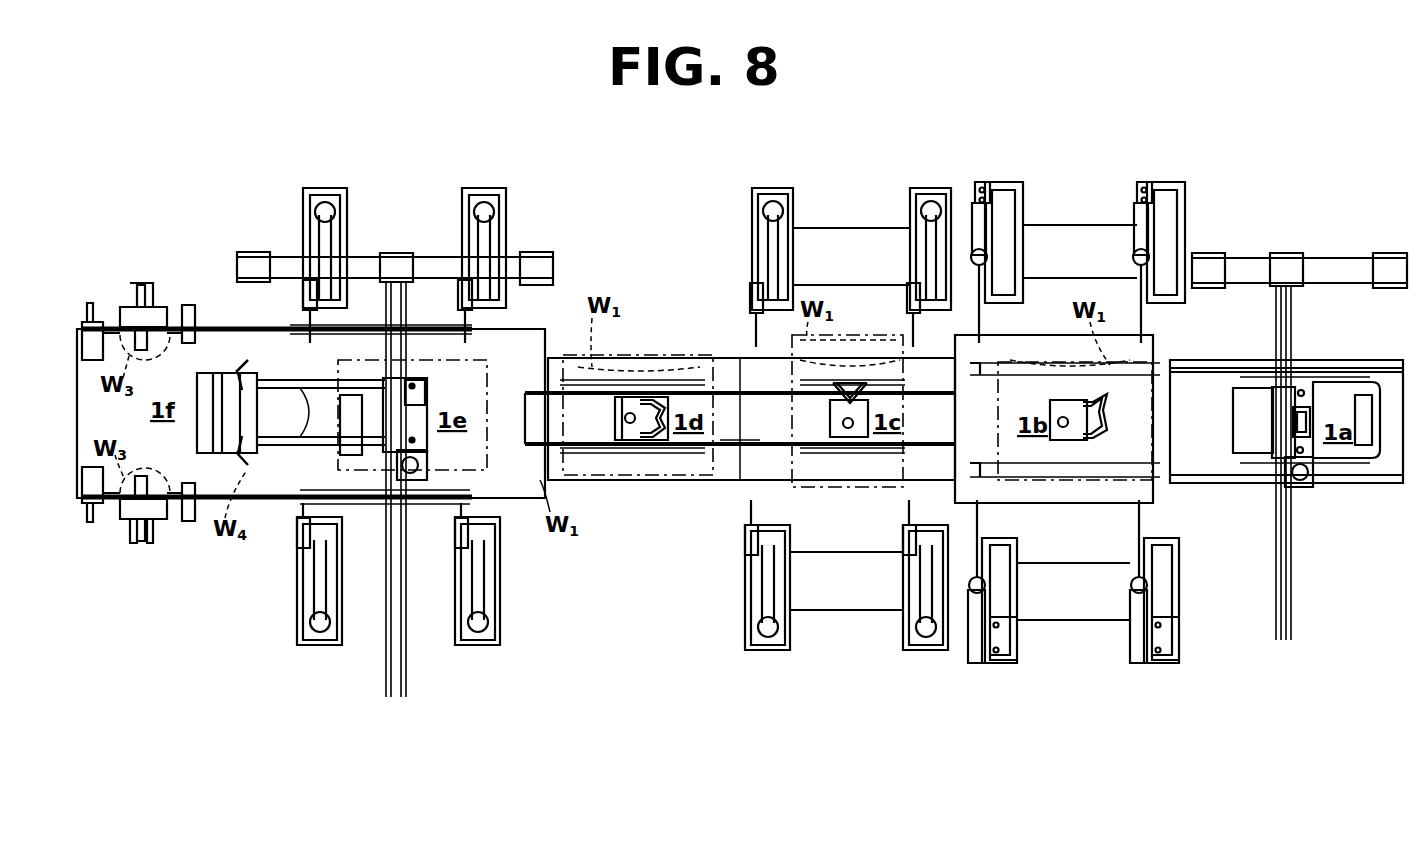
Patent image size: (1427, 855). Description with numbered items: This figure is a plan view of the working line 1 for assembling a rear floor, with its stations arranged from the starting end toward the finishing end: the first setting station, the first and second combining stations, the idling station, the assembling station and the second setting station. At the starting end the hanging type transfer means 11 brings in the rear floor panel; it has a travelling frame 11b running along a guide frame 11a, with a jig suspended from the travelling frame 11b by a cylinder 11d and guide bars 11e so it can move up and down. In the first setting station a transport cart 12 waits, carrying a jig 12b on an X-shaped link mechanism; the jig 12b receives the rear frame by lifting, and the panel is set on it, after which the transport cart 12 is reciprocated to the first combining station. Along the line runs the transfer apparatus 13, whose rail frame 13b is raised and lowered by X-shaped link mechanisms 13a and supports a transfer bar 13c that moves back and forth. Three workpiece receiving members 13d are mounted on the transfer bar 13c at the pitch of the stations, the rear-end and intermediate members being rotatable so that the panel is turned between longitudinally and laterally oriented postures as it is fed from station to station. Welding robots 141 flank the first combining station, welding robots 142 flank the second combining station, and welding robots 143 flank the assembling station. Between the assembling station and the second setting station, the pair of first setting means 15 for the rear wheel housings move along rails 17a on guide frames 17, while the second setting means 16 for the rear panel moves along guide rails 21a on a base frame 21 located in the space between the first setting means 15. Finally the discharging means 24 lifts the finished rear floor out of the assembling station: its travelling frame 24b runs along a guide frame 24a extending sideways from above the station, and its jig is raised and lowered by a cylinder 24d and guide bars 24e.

The working line 1 is at (678, 212).
The transfer means 11 is at (1289, 442).
The guide frame 11a is at (1278, 315).
The travelling frame 11b is at (1247, 432).
The cylinder 11d is at (1298, 422).
The guide bars 11e is at (1303, 391).
The transport cart 12 is at (1333, 380).
The jig 12b is at (1363, 400).
The transfer apparatus 13 is at (725, 387).
The X-shaped link mechanisms 13a is at (662, 362).
The rail frame 13b is at (750, 390).
The transfer bar 13c is at (740, 440).
The workpiece receiving members 13d is at (630, 430).
The welding robots 141 is at (1133, 193).
The welding robots 142 is at (908, 205).
The welding robots 143 is at (460, 203).
The first setting means 15 is at (167, 302).
The second setting means 16 is at (235, 372).
The guide frame 17 is at (232, 323).
The rails 17a is at (252, 323).
The base frame 21 is at (287, 383).
The guide rails 21a is at (300, 392).
The discharging means 24 is at (450, 419).
The guide frame 24a is at (400, 673).
The travelling frame 24b is at (390, 420).
The cylinder 24d is at (423, 407).
The guide bars 24e is at (413, 385).